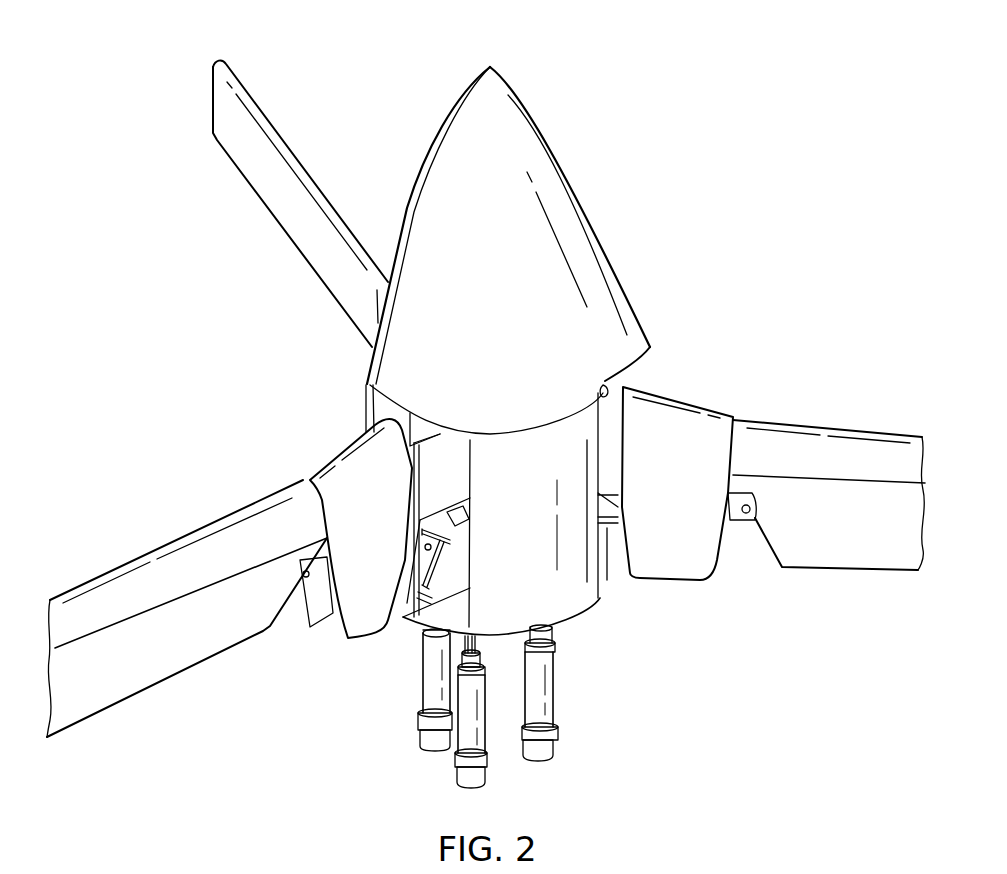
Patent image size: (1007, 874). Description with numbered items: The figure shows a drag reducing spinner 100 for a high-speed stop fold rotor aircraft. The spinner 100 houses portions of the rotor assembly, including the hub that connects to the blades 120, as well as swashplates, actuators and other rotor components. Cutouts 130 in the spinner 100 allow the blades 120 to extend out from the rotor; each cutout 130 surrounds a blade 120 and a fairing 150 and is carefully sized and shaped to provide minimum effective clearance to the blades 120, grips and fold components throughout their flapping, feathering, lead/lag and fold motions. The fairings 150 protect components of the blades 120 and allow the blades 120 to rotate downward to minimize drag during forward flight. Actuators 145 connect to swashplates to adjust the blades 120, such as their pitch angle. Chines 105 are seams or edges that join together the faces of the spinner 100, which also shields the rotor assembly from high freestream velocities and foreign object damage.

The spinner 100 is at (539, 80).
The chines 105 is at (432, 146).
The blades 120 is at (270, 217).
The cutouts 130 is at (603, 386).
The actuators 145 is at (420, 671).
The fairings 150 is at (337, 453).